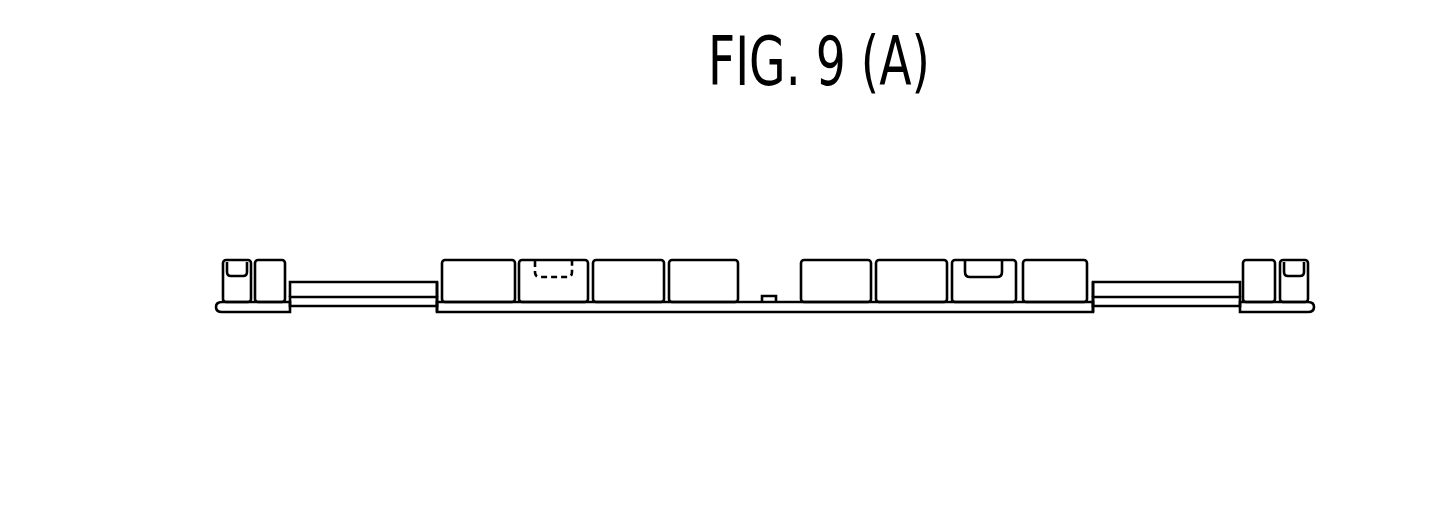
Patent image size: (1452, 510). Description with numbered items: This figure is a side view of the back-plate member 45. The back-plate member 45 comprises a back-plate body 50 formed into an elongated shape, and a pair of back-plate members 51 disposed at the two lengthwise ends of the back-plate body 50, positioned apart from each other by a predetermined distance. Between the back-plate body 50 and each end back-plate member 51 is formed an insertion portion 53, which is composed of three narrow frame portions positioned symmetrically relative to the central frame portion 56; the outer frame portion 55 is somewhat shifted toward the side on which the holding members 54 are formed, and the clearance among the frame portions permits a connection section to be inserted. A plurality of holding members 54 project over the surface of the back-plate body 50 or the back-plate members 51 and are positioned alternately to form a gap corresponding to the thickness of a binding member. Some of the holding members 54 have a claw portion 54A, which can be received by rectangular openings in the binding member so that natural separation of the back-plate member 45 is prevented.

The back-plate member 45 is at (802, 236).
The back-plate body 50 is at (792, 312).
The back-plate member 51 is at (260, 312).
The insertion portion 53 is at (406, 314).
The holding member 54 is at (264, 262).
The claw portion 54A is at (227, 267).
The frame portion 55 is at (362, 308).
The central frame portion 56 is at (368, 287).